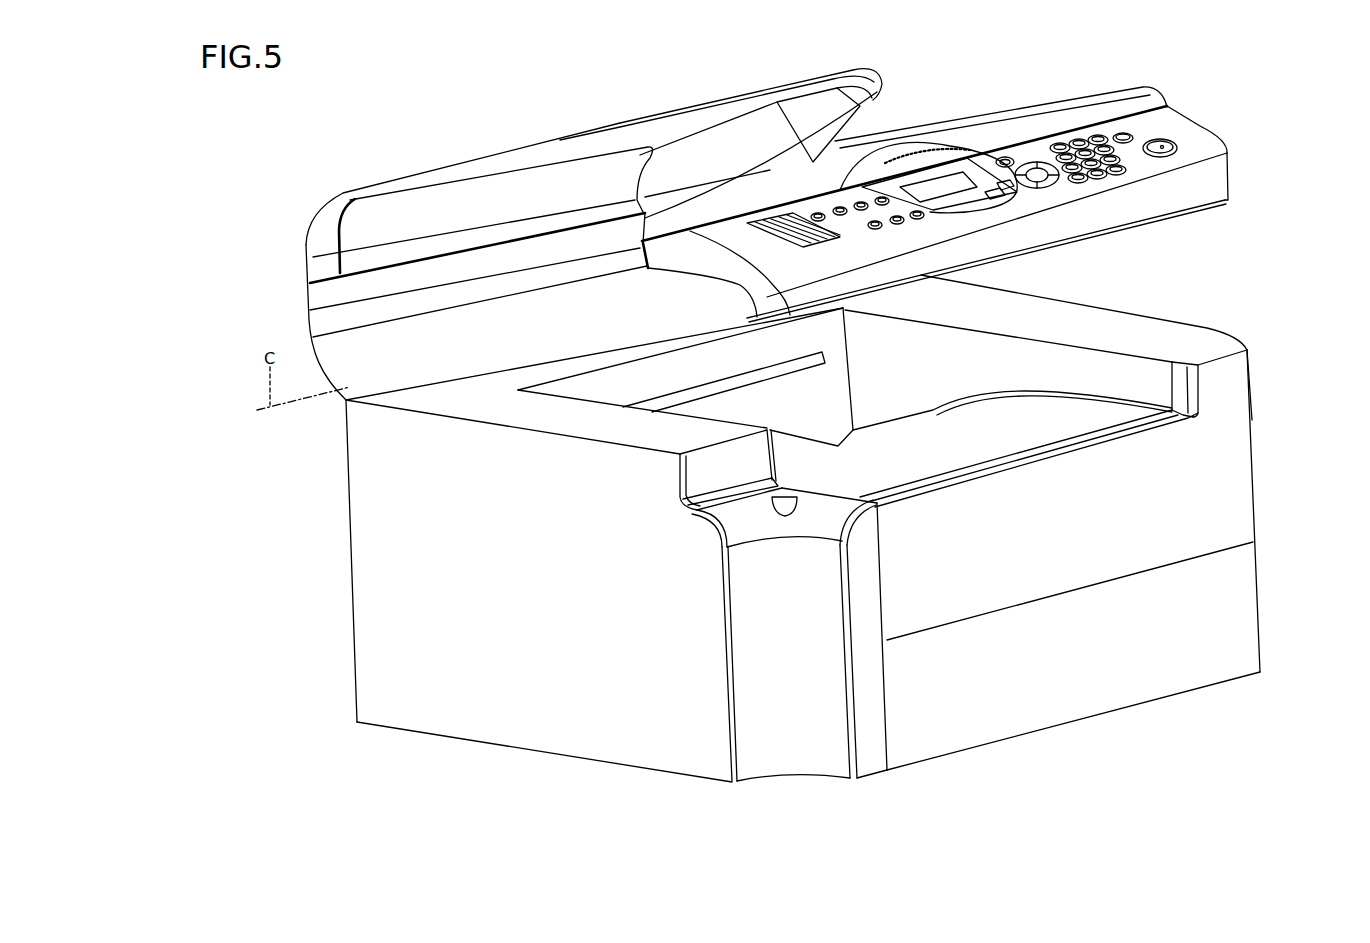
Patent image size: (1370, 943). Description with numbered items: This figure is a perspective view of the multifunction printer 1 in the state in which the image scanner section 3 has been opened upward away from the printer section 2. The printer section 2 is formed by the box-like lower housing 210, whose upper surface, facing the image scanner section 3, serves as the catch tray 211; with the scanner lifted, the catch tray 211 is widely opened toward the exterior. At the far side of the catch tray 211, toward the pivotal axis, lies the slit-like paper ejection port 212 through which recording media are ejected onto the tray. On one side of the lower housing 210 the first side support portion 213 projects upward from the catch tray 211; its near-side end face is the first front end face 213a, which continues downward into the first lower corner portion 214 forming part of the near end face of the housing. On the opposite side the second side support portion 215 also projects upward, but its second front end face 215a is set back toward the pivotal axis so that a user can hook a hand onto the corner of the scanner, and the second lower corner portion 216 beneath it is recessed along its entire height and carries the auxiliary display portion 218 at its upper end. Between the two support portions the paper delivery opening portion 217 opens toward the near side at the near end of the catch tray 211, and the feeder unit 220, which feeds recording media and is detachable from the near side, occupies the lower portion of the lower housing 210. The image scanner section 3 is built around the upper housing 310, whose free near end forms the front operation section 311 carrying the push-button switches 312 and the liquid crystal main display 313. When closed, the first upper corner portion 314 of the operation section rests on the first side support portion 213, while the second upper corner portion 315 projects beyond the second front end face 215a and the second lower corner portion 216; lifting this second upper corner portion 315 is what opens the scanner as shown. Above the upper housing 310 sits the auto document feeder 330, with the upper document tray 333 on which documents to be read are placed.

The multifunction printer 1 is at (1308, 50).
The printer section 2 is at (338, 563).
The image scanner section 3 is at (1170, 106).
The lower housing 210 is at (365, 679).
The catch tray 211 is at (982, 420).
The paper ejection port 212 is at (826, 360).
The first side support portion 213 is at (1117, 337).
The first front end face 213a is at (1236, 403).
The first lower corner portion 214 is at (1240, 505).
The second side support portion 215 is at (582, 427).
The second front end face 215a is at (713, 503).
The second lower corner portion 216 is at (793, 770).
The paper delivery opening portion 217 is at (1185, 395).
The auxiliary display portion 218 is at (786, 518).
The feeder unit 220 is at (1240, 635).
The upper housing 310 is at (523, 353).
The front operation section 311 is at (1205, 137).
The switches 312 is at (1172, 143).
The main display 313 is at (933, 185).
The first upper corner portion 314 is at (1222, 176).
The second upper corner portion 315 is at (802, 288).
The auto document feeder 330 is at (387, 177).
The upper document tray 333 is at (822, 82).